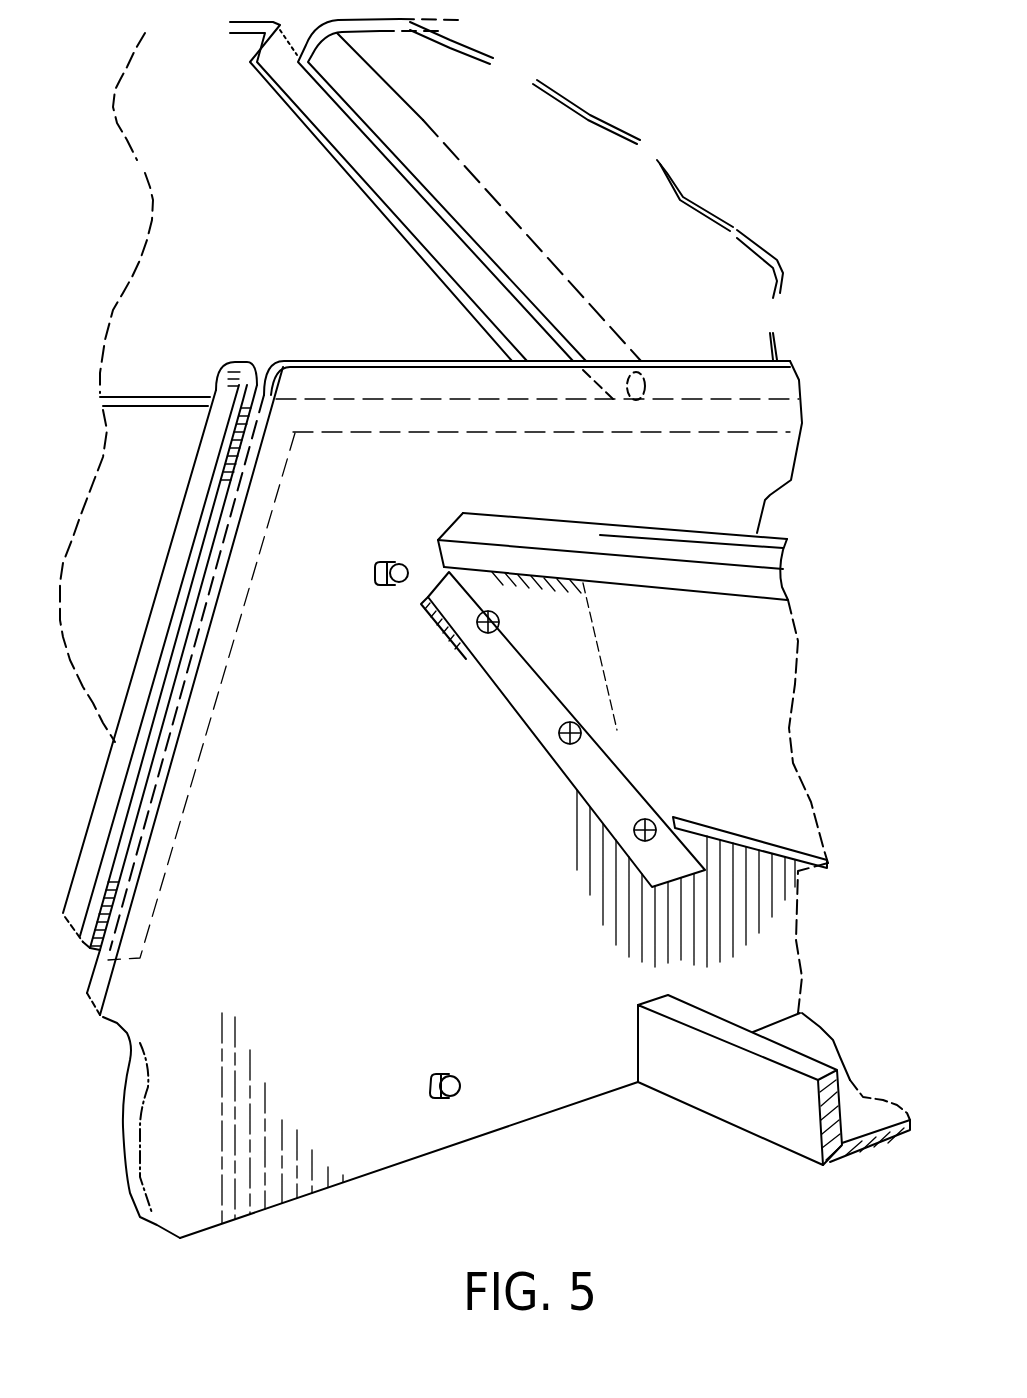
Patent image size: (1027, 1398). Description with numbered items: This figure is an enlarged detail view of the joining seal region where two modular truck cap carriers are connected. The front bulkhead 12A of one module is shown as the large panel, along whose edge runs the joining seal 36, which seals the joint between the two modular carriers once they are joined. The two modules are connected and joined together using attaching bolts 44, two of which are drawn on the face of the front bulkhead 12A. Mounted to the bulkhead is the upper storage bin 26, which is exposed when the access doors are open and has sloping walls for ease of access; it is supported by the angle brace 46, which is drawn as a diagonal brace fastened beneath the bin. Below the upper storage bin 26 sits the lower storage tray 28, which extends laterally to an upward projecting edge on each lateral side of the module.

The front bulkhead 12A is at (345, 749).
The upper storage bin 26 is at (706, 722).
The lower storage tray 28 is at (687, 1053).
The joining seal 36 is at (225, 470).
The attaching bolts 44 is at (379, 560).
The angle brace 46 is at (538, 682).